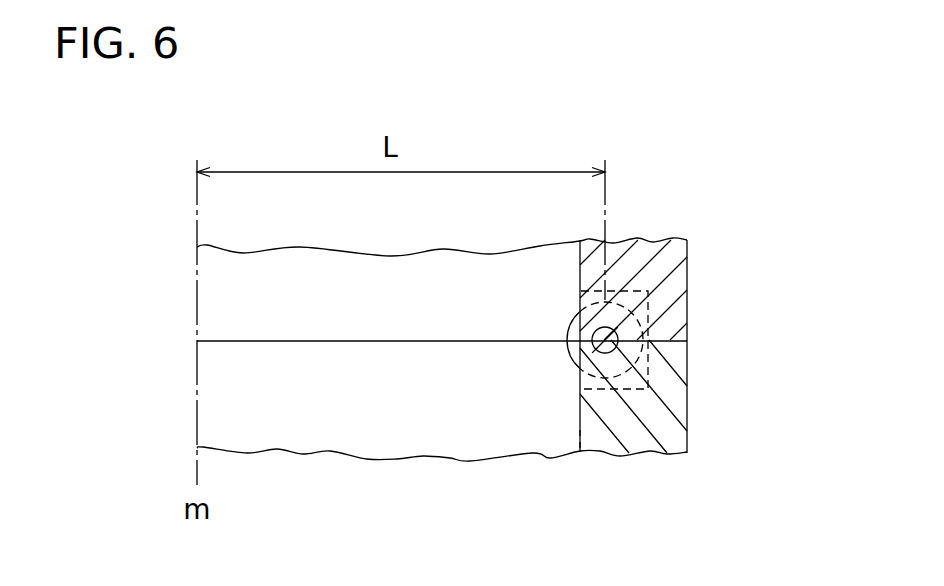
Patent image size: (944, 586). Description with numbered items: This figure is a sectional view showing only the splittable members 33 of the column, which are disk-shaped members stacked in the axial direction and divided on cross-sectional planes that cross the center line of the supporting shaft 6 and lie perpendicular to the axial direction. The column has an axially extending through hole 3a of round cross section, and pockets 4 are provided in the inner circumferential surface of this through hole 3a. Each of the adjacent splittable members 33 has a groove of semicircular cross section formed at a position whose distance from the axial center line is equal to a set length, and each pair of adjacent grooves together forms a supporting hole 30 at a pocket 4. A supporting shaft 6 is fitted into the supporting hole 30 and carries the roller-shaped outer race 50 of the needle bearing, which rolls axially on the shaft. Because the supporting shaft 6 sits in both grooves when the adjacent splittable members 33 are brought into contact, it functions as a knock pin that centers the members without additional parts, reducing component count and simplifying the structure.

The through hole 3a is at (580, 438).
The pocket 4 is at (581, 303).
The supporting shaft 6 is at (580, 402).
The supporting hole 30 is at (648, 303).
The splittable member 33 is at (680, 397).
The outer race 50 is at (568, 365).